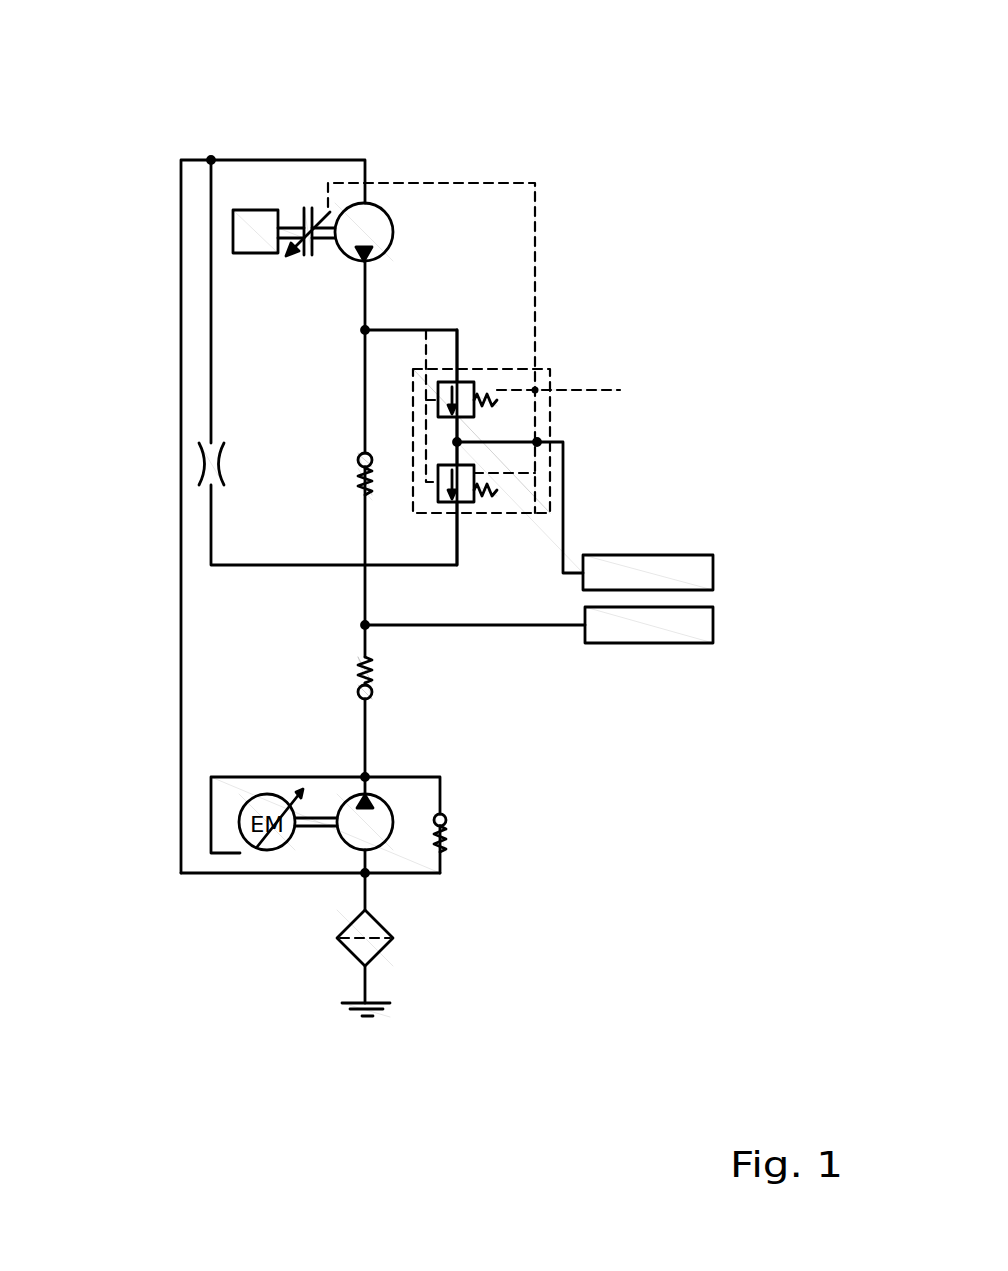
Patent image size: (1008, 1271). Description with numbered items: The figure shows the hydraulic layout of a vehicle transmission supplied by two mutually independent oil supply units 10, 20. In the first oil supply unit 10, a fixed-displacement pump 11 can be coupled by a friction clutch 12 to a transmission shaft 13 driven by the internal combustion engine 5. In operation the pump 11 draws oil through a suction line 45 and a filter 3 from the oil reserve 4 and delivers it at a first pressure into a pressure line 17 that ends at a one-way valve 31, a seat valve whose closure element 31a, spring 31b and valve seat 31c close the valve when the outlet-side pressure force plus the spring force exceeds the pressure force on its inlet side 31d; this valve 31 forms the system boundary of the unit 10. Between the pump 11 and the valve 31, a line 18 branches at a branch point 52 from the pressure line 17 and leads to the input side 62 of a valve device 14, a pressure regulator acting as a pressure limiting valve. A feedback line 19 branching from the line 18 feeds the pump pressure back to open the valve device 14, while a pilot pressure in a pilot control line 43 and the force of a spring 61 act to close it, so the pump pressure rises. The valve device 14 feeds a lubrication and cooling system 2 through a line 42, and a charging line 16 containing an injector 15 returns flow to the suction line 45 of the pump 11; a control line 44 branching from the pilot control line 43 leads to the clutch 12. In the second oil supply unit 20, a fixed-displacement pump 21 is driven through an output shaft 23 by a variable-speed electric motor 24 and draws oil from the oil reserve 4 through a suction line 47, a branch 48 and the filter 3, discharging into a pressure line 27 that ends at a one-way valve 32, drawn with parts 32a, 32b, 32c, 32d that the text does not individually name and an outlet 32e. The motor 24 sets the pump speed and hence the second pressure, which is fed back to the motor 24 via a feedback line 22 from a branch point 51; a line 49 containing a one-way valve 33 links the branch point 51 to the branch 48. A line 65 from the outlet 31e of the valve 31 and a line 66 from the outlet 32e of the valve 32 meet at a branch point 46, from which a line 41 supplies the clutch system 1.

The clutch system 1 is at (697, 628).
The lubrication and cooling system 2 is at (700, 572).
The filter 3 is at (377, 1033).
The oil reserve 4 is at (364, 1080).
The internal combustion engine 5 is at (246, 150).
The oil supply unit 10 is at (225, 130).
The pump 11 is at (407, 154).
The friction clutch 12 is at (330, 151).
The transmission shaft 13 is at (287, 228).
The valve device 14 is at (609, 362).
The injector 15 is at (153, 464).
The charging line 16 is at (148, 289).
The pressure line 17 is at (210, 257).
The line 18 is at (468, 172).
The feedback line 19 is at (634, 406).
The second oil supply unit 20 is at (183, 885).
The pump 21 is at (438, 975).
The feedback line 22 is at (151, 1015).
The output shaft 23 is at (273, 987).
The variable-speed electric motor 24 is at (222, 975).
The pressure line 27 is at (603, 850).
The one-way valve 31 is at (348, 473).
The closure element 31a is at (219, 411).
The spring 31b is at (219, 521).
The valve seat 31c is at (219, 432).
The inlet side 31d is at (216, 382).
The outlet 31e is at (219, 553).
The one-way valve 32 is at (227, 732).
The check valve inlet 32a is at (594, 769).
The check valve closing body 32b is at (590, 740).
The check valve line 32c is at (216, 778).
The check valve line 32d is at (139, 840).
The outlet 32e is at (590, 703).
The one-way valve 33 is at (547, 985).
The line 41 is at (585, 665).
The line 42 is at (631, 507).
The pilot control line 43 is at (669, 323).
The control line 44 is at (688, 321).
The suction line 45 is at (358, 104).
The branch point 46 is at (227, 686).
The suction line 47 is at (317, 1003).
The branch 48 is at (423, 1015).
The line 49 is at (520, 1004).
The branch point 51 is at (622, 873).
The branch point 52 is at (271, 296).
The spring 61 is at (639, 416).
The input side 62 is at (520, 280).
The line 65 is at (223, 616).
The line 66 is at (227, 723).